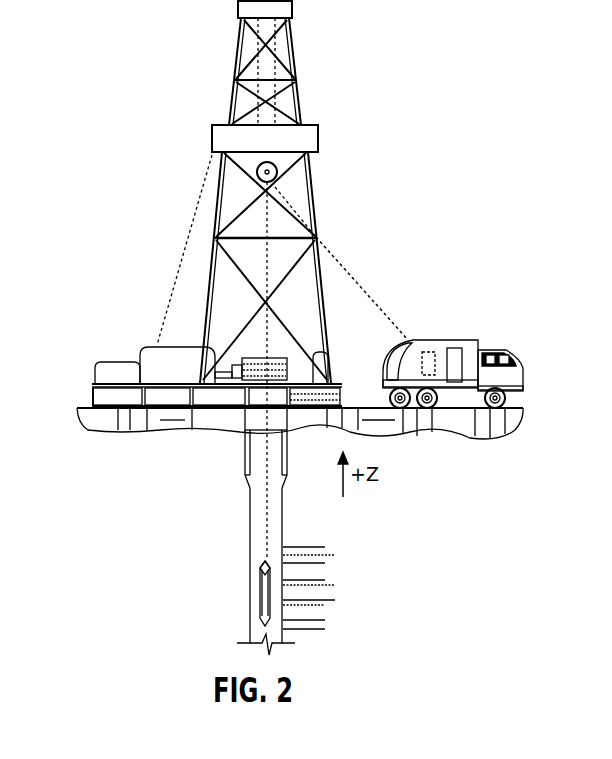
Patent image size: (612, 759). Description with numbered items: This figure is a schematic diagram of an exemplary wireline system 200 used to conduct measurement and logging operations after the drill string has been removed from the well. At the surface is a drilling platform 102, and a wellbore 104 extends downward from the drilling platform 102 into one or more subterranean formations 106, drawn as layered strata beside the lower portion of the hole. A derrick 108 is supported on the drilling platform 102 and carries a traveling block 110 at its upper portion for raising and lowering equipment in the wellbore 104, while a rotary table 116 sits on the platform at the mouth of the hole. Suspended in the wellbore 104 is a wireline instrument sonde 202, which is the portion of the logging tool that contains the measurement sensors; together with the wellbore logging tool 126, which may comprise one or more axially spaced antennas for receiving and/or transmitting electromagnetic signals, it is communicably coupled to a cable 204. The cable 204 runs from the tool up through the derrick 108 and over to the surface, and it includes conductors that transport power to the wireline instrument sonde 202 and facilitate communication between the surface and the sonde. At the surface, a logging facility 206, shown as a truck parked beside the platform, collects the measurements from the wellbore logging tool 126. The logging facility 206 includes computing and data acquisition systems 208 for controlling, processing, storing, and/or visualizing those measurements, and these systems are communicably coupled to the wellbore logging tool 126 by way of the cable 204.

The drilling platform 102 is at (92, 393).
The wellbore 104 is at (283, 515).
The subterranean formations 106 is at (337, 543).
The derrick 108 is at (300, 68).
The traveling block 110 is at (278, 172).
The rotary table 116 is at (276, 358).
The wellbore logging tool 126 is at (262, 589).
The wireline system 200 is at (417, 132).
The wireline instrument sonde 202 is at (258, 572).
The cable 204 is at (353, 277).
The logging facility 206 is at (470, 341).
The computing and data acquisition systems 208 is at (430, 352).